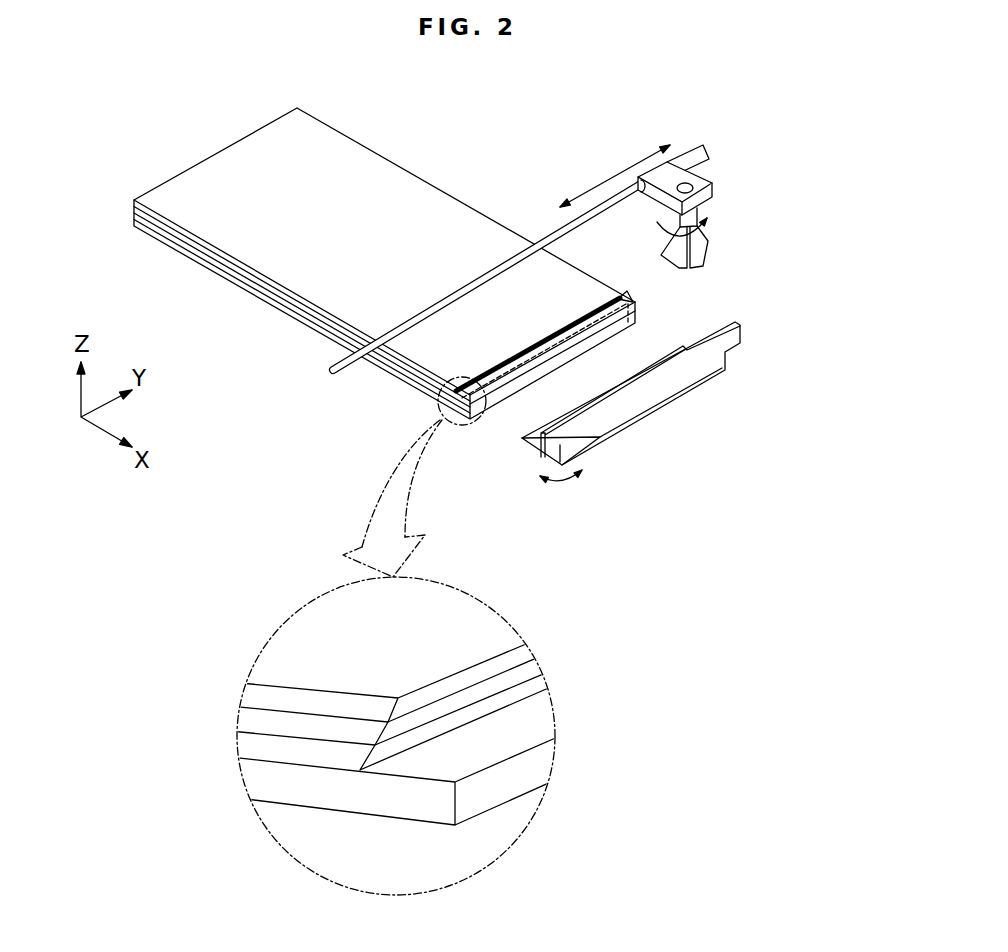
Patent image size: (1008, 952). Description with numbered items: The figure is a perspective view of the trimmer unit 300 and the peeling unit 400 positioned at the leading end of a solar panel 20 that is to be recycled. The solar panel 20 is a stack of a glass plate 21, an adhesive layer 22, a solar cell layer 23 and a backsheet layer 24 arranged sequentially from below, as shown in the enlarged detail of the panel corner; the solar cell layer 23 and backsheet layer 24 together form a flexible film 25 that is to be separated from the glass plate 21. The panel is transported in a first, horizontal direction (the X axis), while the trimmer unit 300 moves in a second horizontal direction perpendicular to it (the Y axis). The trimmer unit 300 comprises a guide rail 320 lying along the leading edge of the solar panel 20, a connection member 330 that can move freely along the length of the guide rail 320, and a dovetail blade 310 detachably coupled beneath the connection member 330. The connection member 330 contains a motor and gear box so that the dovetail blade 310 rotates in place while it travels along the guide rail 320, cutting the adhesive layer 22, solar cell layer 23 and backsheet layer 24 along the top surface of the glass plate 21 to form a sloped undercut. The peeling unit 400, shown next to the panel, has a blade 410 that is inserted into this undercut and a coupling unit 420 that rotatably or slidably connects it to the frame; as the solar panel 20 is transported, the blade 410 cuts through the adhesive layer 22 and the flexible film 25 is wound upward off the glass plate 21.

The solar panel 20 is at (369, 130).
The glass plate 21 is at (253, 780).
The adhesive layer 22 is at (247, 747).
The solar cell layer 23 is at (247, 723).
The backsheet layer 24 is at (247, 697).
The flexible film 25 is at (117, 678).
The trimmer unit 300 is at (573, 232).
The dovetail blade 310 is at (711, 239).
The guide rail 320 is at (548, 230).
The connection member 330 is at (714, 191).
The peeling unit 400 is at (679, 421).
The blade 410 is at (527, 445).
The coupling unit 420 is at (552, 438).